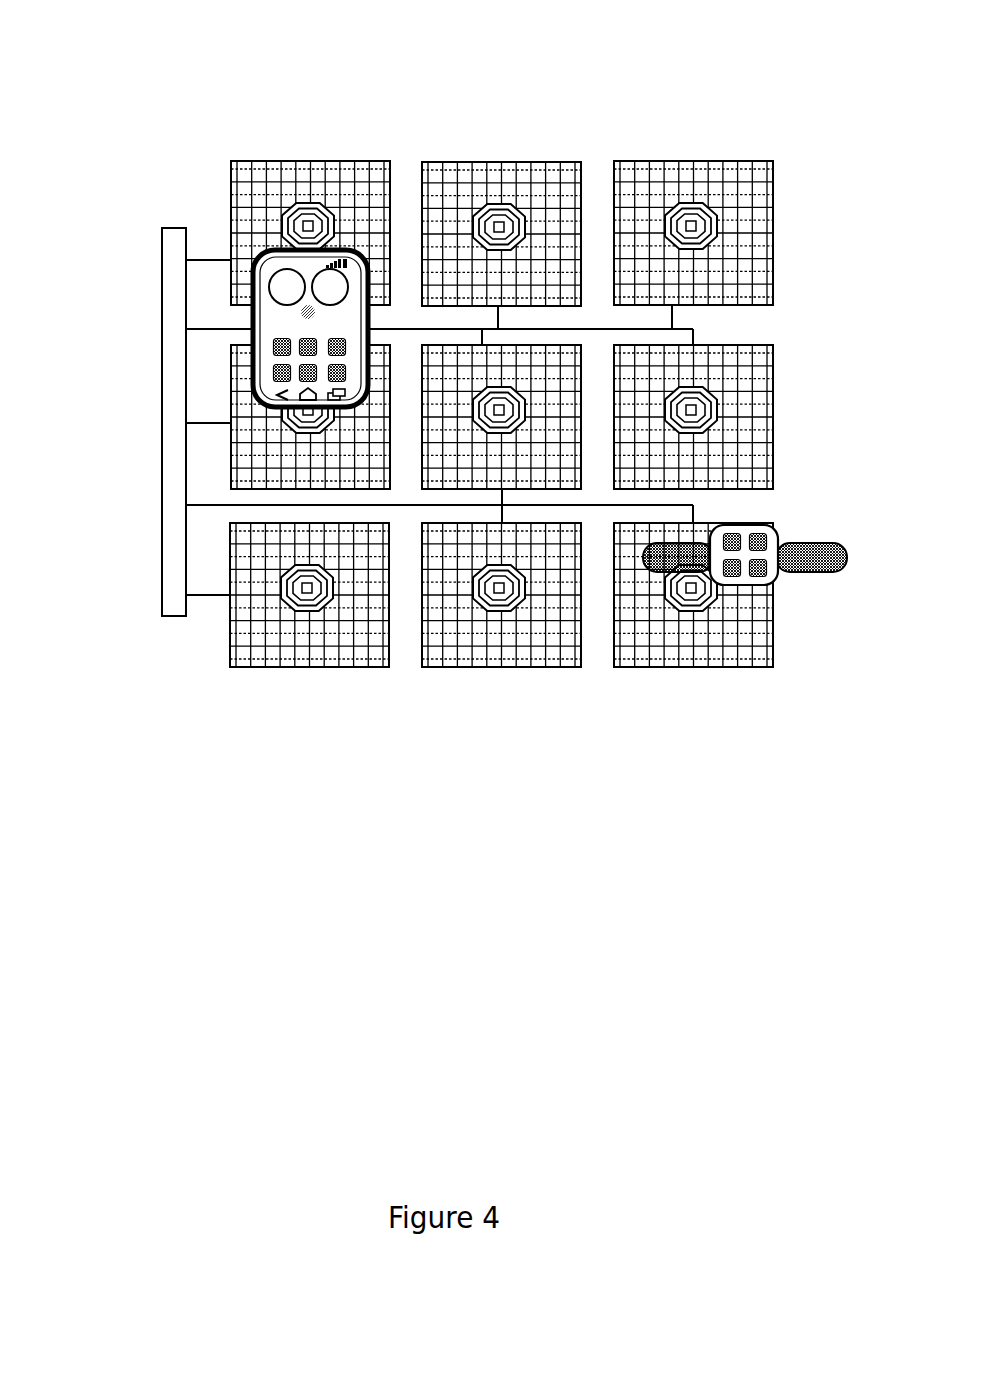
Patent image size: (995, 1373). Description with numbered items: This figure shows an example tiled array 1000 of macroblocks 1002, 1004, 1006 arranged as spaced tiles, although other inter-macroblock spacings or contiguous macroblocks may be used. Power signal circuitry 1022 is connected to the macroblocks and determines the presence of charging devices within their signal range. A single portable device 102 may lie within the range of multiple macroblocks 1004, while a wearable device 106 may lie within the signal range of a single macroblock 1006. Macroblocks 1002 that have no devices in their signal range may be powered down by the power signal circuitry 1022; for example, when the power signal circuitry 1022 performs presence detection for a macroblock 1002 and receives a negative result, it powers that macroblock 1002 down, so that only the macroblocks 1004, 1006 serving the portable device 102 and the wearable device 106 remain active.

The tiled array 1000 is at (172, 49).
The macroblock 1002 is at (484, 162).
The macroblock 1004 is at (231, 190).
The macroblock 1006 is at (663, 666).
The power signal circuitry 1022 is at (162, 272).
The portable device 102 is at (250, 327).
The wearable device 106 is at (760, 525).